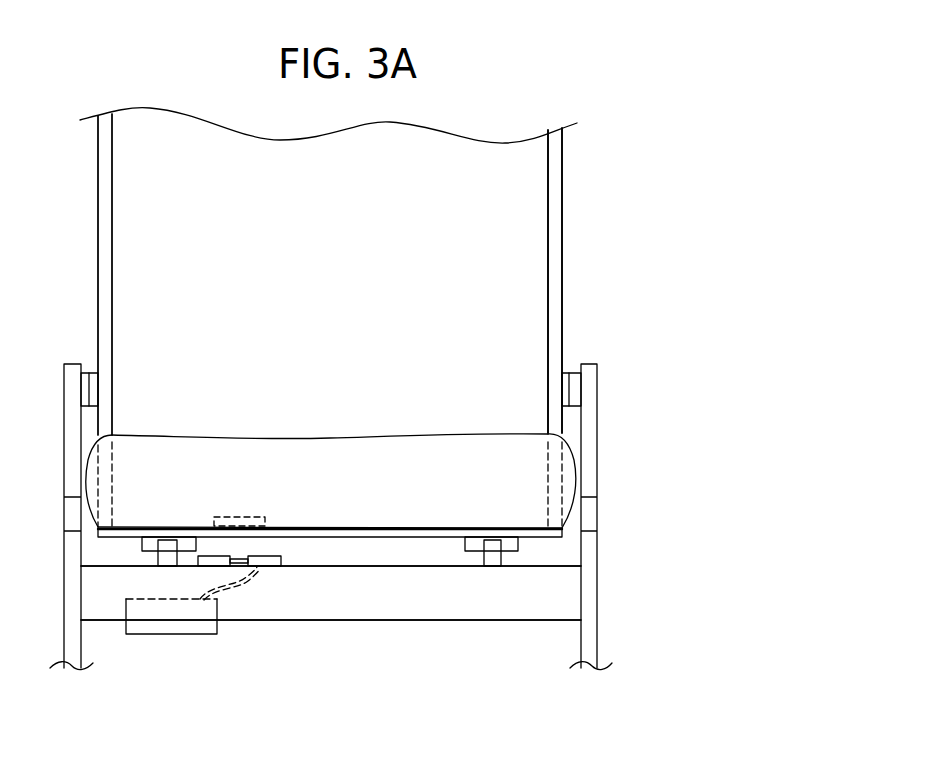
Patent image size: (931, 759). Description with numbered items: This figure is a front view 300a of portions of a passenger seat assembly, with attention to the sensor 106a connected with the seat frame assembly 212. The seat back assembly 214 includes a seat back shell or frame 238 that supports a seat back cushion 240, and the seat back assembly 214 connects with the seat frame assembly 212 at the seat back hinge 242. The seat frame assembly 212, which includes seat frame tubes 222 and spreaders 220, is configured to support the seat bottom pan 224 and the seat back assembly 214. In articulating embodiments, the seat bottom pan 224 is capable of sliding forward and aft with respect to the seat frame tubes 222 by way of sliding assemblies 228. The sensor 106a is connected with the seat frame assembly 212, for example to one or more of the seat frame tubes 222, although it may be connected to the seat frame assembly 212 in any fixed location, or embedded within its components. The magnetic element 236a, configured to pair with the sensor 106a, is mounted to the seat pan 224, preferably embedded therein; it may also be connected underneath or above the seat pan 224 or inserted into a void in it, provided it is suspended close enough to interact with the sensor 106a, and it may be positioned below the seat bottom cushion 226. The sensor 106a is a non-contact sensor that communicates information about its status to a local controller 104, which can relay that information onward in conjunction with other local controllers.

The front view 300a is at (655, 212).
The seat back assembly 214 is at (567, 228).
The seat back frame 238 is at (562, 298).
The seat back cushion 240 is at (338, 278).
The seat back hinge 242 is at (89, 392).
The seat bottom cushion 226 is at (312, 437).
The magnetic element 236a is at (247, 517).
The sliding assemblies 228 is at (493, 552).
The spreaders 220 is at (597, 545).
The seat frame assembly 212 is at (607, 567).
The seat bottom pan 224 is at (353, 538).
The seat frame tubes 222 is at (412, 621).
The local controller 104 is at (177, 634).
The sensor 106a is at (282, 558).